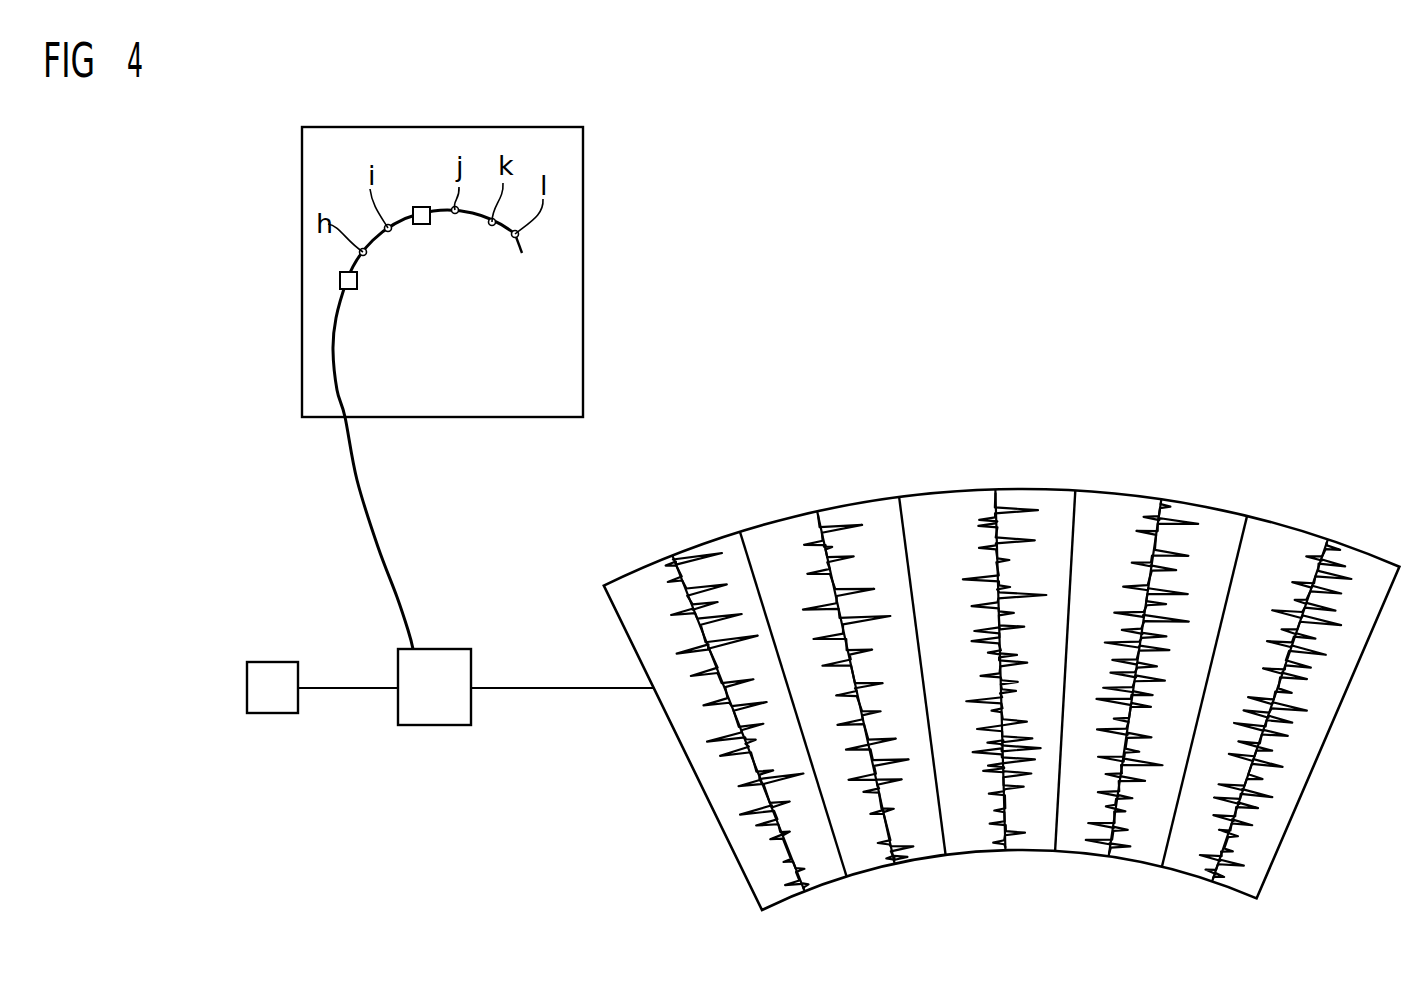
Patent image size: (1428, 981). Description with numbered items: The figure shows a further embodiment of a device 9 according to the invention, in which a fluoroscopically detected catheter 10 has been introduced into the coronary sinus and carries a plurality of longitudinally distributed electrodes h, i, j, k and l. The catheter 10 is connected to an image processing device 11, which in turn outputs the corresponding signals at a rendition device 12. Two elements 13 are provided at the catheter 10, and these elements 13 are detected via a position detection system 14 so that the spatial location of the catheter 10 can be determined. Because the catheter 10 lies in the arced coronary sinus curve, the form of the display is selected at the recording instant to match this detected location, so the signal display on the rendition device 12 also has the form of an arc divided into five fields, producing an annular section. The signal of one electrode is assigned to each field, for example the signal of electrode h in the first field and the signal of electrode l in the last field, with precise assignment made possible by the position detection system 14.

The device 9 is at (776, 300).
The catheter 10 is at (338, 366).
The image processing device 11 is at (427, 725).
The rendition device 12 is at (710, 836).
The elements 13 is at (422, 225).
The position detection system 14 is at (277, 713).